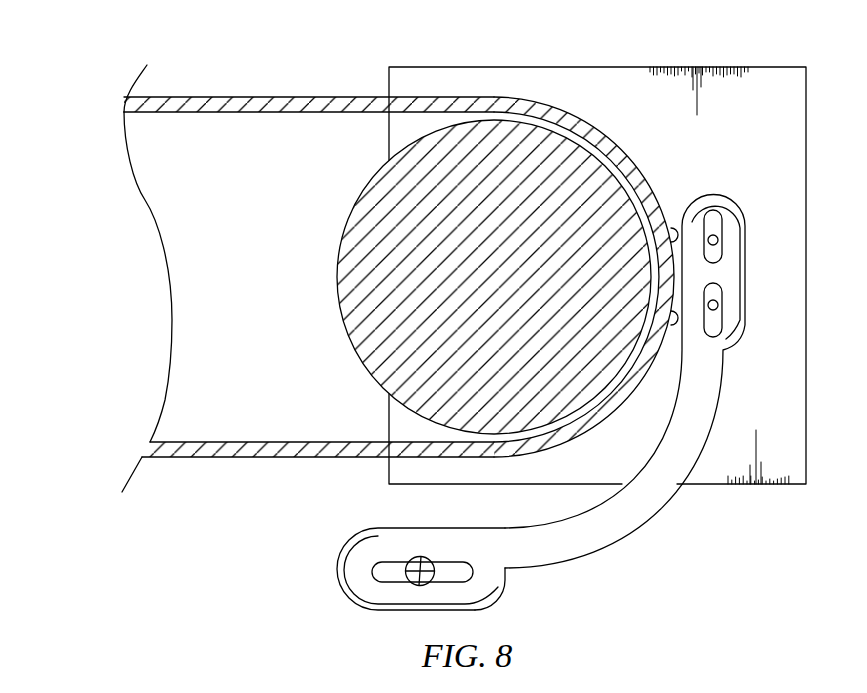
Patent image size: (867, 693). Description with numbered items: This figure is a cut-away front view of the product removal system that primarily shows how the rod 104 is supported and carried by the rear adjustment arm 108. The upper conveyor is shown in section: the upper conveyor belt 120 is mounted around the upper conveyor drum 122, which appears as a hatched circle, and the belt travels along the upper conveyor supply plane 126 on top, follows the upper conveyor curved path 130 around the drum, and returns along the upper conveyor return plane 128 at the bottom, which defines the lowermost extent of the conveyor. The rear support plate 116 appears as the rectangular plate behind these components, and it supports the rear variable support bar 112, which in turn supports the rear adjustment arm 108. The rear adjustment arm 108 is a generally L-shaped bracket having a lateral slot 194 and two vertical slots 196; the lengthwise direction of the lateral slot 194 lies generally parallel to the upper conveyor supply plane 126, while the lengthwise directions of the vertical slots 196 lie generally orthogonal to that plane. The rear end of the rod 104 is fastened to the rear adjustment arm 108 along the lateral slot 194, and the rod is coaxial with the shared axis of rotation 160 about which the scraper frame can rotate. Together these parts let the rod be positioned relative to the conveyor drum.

The rod 104 is at (409, 592).
The rear adjustment arm 108 is at (640, 523).
The rear variable support bar 112 is at (721, 262).
The rear support plate 116 is at (722, 67).
The upper conveyor belt 120 is at (213, 112).
The upper conveyor drum 122 is at (350, 212).
The upper conveyor supply plane 126 is at (296, 97).
The upper conveyor return plane 128 is at (228, 458).
The upper conveyor curved path 130 is at (624, 153).
The shared axis of rotation 160 is at (416, 556).
The lateral slot 194 is at (506, 586).
The vertical slots 196 is at (722, 228).